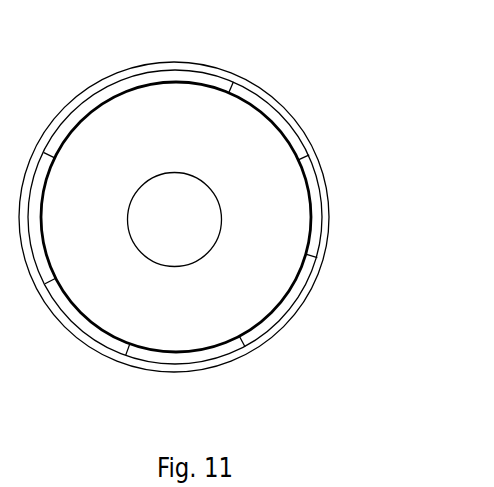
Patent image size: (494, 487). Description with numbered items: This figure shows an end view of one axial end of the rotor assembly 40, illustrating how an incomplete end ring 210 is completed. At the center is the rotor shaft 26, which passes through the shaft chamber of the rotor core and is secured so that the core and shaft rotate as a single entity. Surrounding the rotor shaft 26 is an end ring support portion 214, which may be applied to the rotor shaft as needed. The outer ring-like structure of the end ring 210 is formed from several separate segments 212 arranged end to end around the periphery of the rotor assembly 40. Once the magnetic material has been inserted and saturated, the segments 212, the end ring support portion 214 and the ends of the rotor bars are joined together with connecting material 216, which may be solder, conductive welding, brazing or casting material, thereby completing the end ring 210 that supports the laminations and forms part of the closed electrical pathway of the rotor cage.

The rotor assembly 40 is at (222, 70).
The incomplete end ring 210 is at (110, 117).
The segments 212 is at (80, 117).
The end ring support portion 214 is at (194, 297).
The connecting material 216 is at (160, 91).
The rotor shaft 26 is at (181, 230).